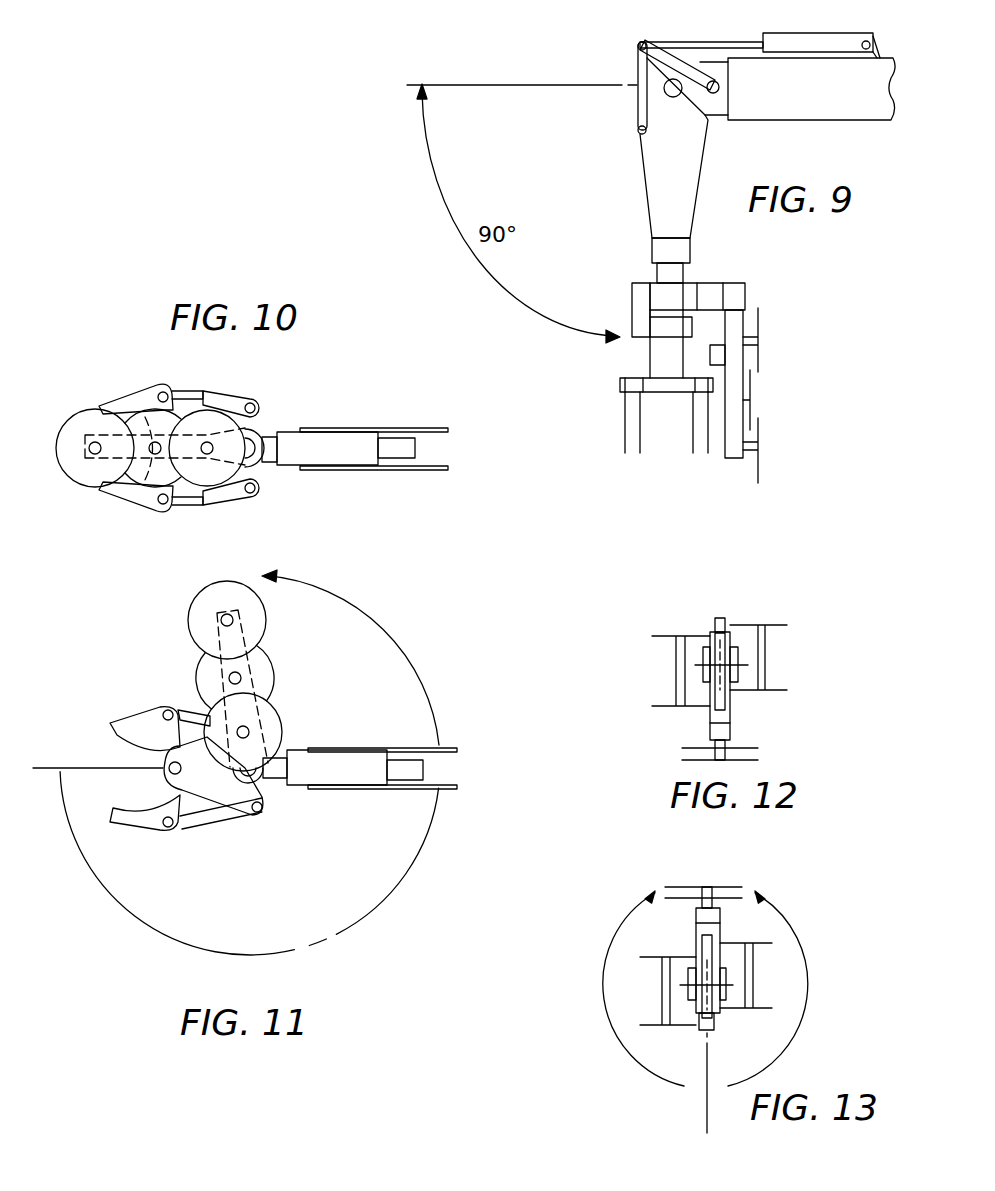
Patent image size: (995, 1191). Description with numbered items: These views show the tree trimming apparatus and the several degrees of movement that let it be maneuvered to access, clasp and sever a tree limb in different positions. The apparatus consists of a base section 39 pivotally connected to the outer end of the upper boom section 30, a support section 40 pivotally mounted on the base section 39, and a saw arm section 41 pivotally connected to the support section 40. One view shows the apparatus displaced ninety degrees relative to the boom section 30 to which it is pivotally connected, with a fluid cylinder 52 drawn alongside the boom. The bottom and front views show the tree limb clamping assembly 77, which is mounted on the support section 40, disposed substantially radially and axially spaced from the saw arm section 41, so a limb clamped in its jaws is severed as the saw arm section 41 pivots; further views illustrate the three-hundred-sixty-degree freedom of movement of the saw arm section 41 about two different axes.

In FIG. 9, the upper boom section 30 is at (825, 121).
In FIG. 9, the base section 39 is at (636, 176).
In FIG. 10, the base section 39 is at (385, 425).
In FIG. 11, the base section 39 is at (337, 796).
In FIG. 9, the support section 40 is at (717, 280).
In FIG. 9, the saw arm section 41 is at (785, 397).
In FIG. 10, the saw arm section 41 is at (88, 496).
In FIG. 11, the saw arm section 41 is at (281, 682).
In FIG. 12, the saw arm section 41 is at (740, 728).
In FIG. 13, the saw arm section 41 is at (757, 918).
In FIG. 9, the hydraulic cylinder 52 is at (808, 32).
In FIG. 9, the tree limb clamping assembly 77 is at (617, 403).
In FIG. 10, the tree limb clamping assembly 77 is at (130, 389).
In FIG. 11, the tree limb clamping assembly 77 is at (137, 714).
In FIG. 12, the tree limb clamping assembly 77 is at (770, 668).
In FIG. 13, the tree limb clamping assembly 77 is at (760, 985).